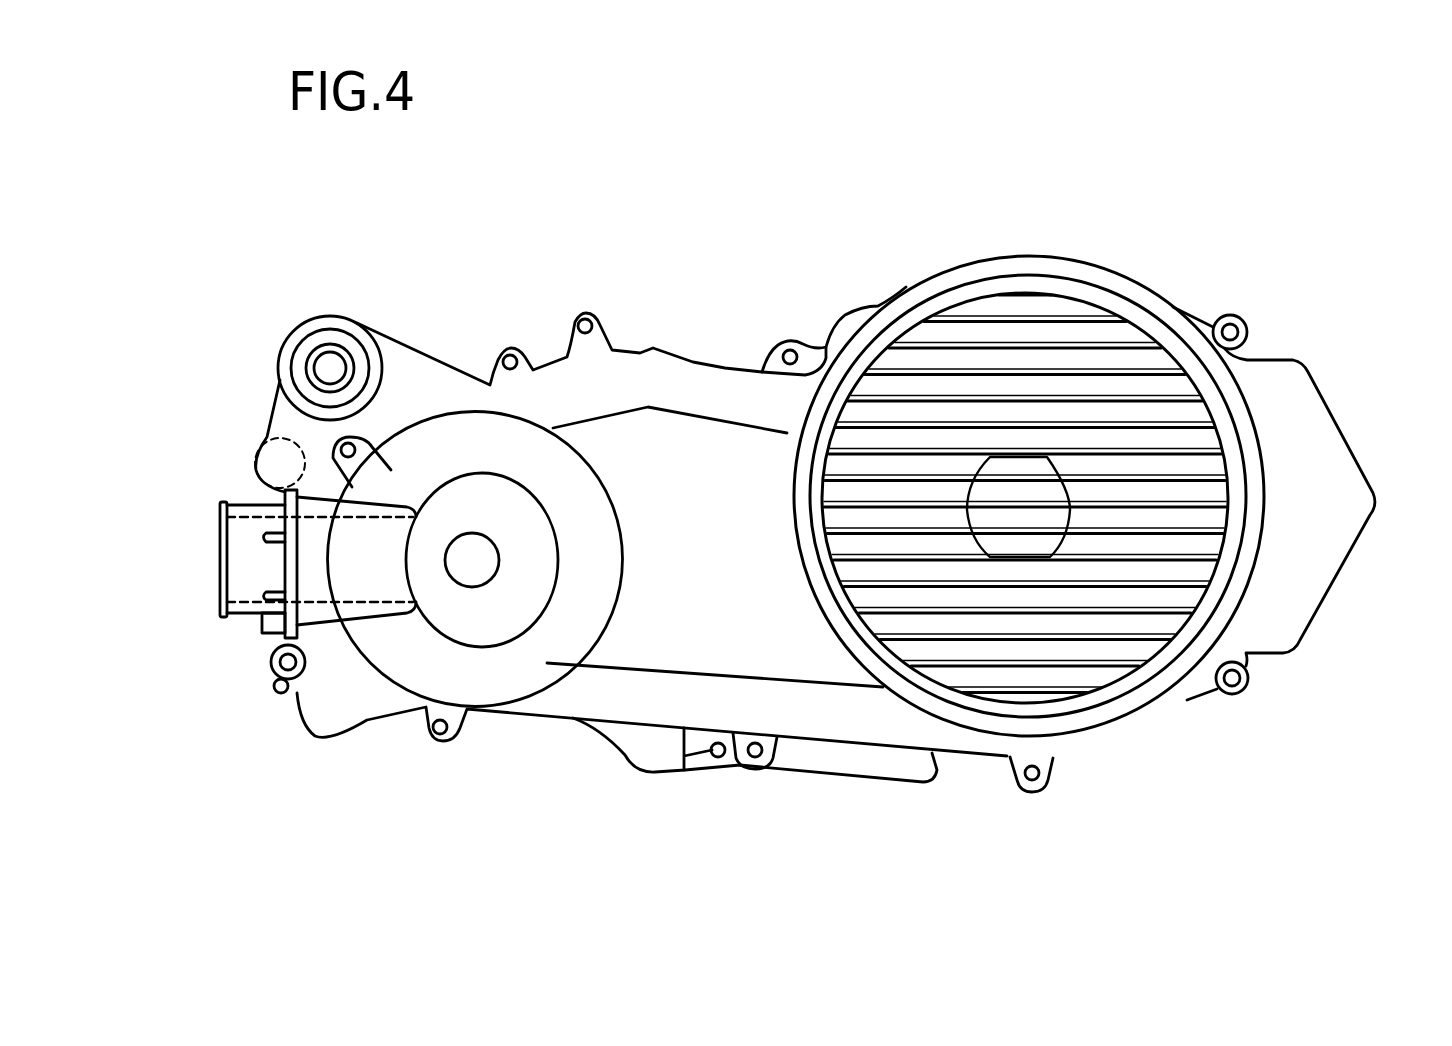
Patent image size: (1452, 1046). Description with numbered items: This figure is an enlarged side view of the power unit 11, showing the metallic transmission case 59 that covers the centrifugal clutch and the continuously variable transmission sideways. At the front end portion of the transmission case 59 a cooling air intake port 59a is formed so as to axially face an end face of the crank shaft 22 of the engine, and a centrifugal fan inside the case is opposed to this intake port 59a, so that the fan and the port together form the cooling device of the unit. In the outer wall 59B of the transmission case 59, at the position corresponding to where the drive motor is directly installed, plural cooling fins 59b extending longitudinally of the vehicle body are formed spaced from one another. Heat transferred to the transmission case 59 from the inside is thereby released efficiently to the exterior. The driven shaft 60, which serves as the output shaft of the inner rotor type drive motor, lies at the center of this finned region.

The power unit 11 is at (548, 752).
The crank shaft 22 is at (458, 567).
The transmission case 59 is at (673, 433).
The cooling air intake port 59a is at (214, 569).
The cooling fins 59b is at (1100, 340).
The outer wall 59B is at (1108, 623).
The driven shaft 60 is at (1020, 520).